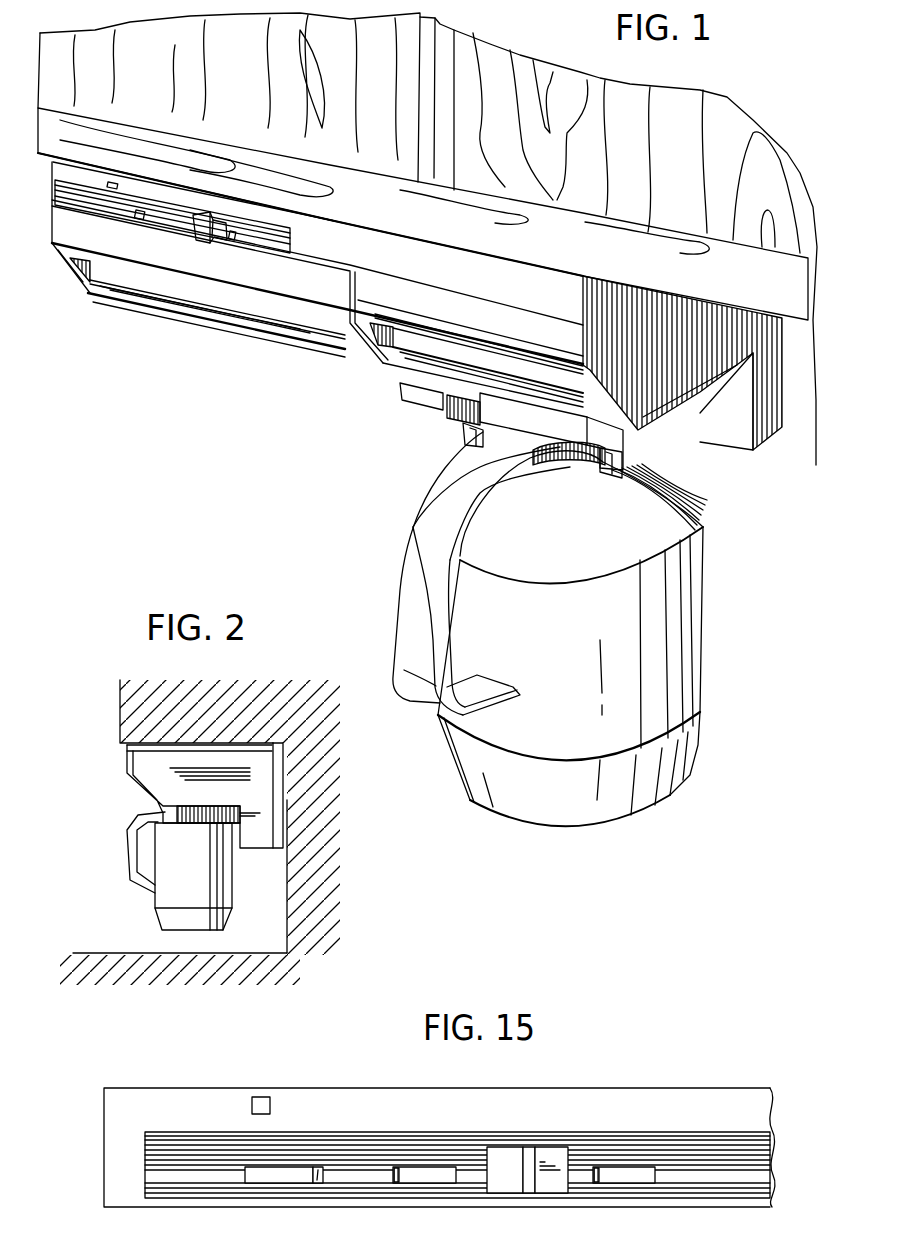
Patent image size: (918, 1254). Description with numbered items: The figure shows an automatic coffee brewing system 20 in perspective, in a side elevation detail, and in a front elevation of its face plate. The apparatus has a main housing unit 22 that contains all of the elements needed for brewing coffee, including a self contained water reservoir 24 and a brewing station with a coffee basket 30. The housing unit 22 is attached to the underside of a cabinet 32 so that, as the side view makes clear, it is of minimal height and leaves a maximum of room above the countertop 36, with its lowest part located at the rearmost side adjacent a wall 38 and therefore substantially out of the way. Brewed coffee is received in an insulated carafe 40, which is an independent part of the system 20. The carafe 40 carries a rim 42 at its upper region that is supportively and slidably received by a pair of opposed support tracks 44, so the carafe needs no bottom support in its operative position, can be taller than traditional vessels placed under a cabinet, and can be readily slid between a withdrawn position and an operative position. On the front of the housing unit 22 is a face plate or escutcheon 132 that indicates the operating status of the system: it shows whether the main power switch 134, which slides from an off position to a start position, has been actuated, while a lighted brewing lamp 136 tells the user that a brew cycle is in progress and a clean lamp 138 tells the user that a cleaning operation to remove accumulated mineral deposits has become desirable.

In FIG. 1, the automatic coffee brewing system 20 is at (343, 350).
In FIG. 2, the automatic coffee brewing system 20 is at (127, 876).
In FIG. 1, the main housing unit 22 is at (708, 162).
In FIG. 2, the main housing unit 22 is at (284, 800).
In FIG. 1, the water reservoir 24 is at (143, 303).
In FIG. 1, the coffee basket 30 is at (388, 375).
In FIG. 2, the coffee basket 30 is at (132, 786).
In FIG. 1, the cabinet 32 is at (720, 277).
In FIG. 2, the cabinet 32 is at (142, 702).
In FIG. 2, the countertop 36 is at (136, 956).
In FIG. 2, the wall 38 is at (286, 920).
In FIG. 1, the insulated carafe 40 is at (589, 669).
In FIG. 2, the insulated carafe 40 is at (204, 883).
In FIG. 1, the rim 42 is at (563, 458).
In FIG. 1, the support tracks 44 is at (462, 437).
In FIG. 1, the escutcheon 132 is at (470, 286).
In FIG. 15, the escutcheon 132 is at (648, 1088).
In FIG. 1, the main power switch 134 is at (212, 240).
In FIG. 15, the main power switch 134 is at (547, 1157).
In FIG. 15, the brewing lamp 136 is at (320, 1165).
In FIG. 15, the clean lamp 138 is at (263, 1096).